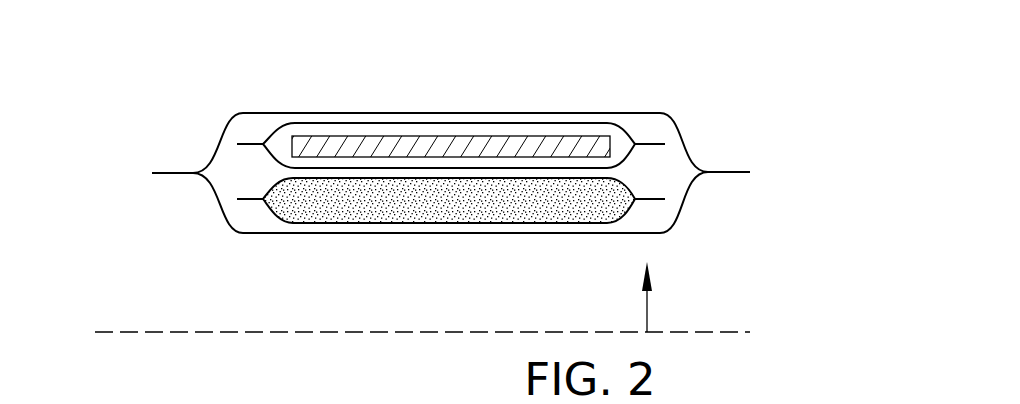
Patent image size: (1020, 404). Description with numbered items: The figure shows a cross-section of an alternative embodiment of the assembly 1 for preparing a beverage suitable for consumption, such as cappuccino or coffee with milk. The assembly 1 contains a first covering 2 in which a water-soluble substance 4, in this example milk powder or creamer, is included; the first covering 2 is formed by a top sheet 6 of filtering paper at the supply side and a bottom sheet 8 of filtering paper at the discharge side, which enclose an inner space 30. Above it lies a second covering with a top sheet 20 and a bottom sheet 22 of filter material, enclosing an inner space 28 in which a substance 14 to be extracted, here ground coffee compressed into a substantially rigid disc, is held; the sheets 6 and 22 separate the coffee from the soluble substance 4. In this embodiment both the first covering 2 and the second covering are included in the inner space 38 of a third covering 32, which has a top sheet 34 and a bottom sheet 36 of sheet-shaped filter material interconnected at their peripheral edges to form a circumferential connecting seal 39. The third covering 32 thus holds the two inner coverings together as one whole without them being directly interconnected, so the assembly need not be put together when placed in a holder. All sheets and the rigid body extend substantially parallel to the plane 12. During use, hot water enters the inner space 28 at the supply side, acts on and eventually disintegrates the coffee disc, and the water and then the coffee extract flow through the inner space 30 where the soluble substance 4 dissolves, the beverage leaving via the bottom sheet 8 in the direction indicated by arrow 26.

The assembly 1 is at (755, 301).
The first covering 2 is at (577, 231).
The water-soluble substance 4 is at (505, 215).
The top sheet 6 is at (277, 190).
The bottom sheet 8 is at (282, 212).
The plane 12 is at (357, 333).
The substance to be extracted 14 is at (343, 150).
The top sheet 20 is at (557, 122).
The bottom sheet 22 is at (588, 155).
The direction arrow 26 is at (648, 308).
The inner space 28 is at (620, 147).
The inner space 30 is at (424, 202).
The third covering 32 is at (385, 112).
The top sheet 34 is at (223, 127).
The bottom sheet 36 is at (240, 232).
The inner space 38 is at (666, 177).
The circumferential connecting seal 39 is at (735, 173).